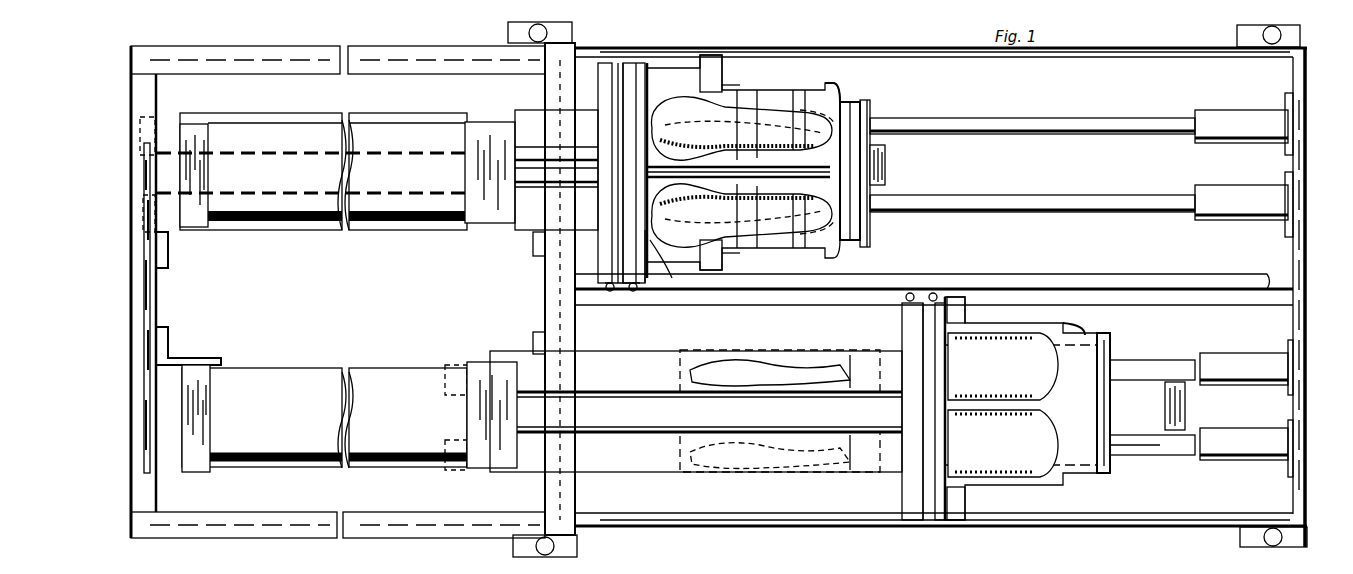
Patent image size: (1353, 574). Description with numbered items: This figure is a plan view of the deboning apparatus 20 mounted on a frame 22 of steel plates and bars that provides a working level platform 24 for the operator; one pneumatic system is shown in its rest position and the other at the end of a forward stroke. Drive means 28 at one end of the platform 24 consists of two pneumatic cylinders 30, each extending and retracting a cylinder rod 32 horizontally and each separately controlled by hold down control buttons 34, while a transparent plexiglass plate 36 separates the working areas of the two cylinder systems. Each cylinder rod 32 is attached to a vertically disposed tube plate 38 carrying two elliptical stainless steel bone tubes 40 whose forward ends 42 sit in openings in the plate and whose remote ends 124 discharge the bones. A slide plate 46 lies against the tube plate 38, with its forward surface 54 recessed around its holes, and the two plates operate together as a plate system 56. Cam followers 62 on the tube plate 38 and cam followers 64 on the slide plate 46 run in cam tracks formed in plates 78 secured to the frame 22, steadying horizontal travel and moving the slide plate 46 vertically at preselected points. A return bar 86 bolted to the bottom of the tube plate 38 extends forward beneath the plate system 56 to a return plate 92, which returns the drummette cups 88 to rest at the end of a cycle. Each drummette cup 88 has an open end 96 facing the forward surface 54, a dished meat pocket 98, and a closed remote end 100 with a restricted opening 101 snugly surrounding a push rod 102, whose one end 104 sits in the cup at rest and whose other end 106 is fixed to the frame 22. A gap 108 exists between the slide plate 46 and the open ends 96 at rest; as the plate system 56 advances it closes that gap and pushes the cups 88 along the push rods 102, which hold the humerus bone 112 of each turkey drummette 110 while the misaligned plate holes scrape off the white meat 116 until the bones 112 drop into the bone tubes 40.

The apparatus 20 is at (1312, 92).
The frame 22 is at (130, 62).
The working level platform 24 is at (1306, 289).
The drive means 28 is at (176, 172).
The pneumatic cylinder 30 is at (283, 232).
The cylinder rod 32 is at (527, 140).
The hold down control buttons 34 is at (506, 33).
The plexiglass plate 36 is at (1258, 274).
The tube plate 38 is at (600, 82).
The bone tubes 40 is at (495, 110).
The forward ends of the bone tubes 42 is at (648, 100).
The slide plate 46 is at (650, 80).
The forward surface of the slide plate 54 is at (640, 290).
The plate system 56 is at (622, 62).
The cam followers 62 is at (586, 60).
The cam followers 64 is at (645, 62).
The plates 78 is at (730, 48).
The return bar 86 is at (1158, 445).
The drummette cups 88 is at (832, 86).
The return plate 92 is at (887, 165).
The open end 96 is at (700, 112).
The meat pockets 98 is at (815, 112).
The remote end 100 is at (875, 118).
The restricted openings 101 is at (880, 95).
The push rods 102 is at (1088, 118).
The end of push rod 104 is at (866, 95).
The other end of push rod 106 is at (1295, 146).
The gap 108 is at (672, 270).
The turkey drummette 110 is at (745, 105).
The humerus bone 112 is at (785, 108).
The white meat 116 is at (706, 58).
The remote ends of the bone tubes 124 is at (140, 132).